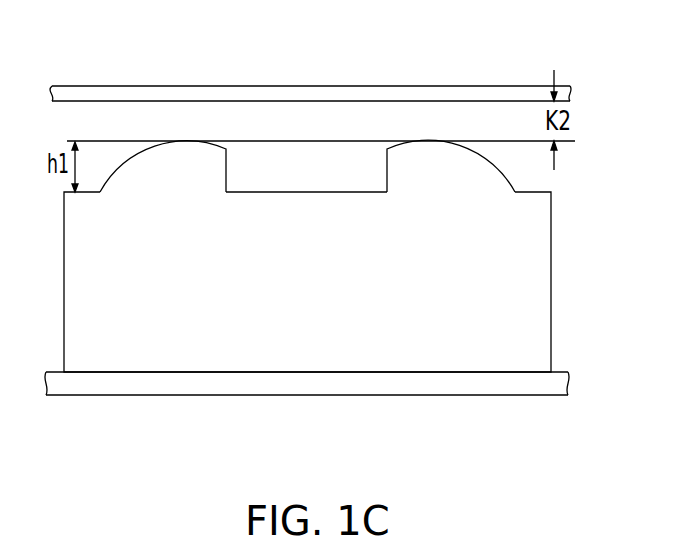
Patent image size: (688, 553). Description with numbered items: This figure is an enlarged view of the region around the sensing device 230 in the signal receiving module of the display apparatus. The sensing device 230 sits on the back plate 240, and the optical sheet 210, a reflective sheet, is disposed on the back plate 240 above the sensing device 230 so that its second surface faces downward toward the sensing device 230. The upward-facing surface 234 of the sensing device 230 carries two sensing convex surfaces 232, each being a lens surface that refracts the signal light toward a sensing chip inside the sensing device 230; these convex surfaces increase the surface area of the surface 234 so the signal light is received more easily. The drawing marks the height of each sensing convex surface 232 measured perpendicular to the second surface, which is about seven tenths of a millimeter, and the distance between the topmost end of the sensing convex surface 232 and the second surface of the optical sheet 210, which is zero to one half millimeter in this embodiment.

The optical sheet 210 is at (500, 97).
The sensing device 230 is at (540, 308).
The sensing convex surface 232 is at (433, 140).
The surface 234 is at (308, 188).
The back plate 240 is at (568, 385).